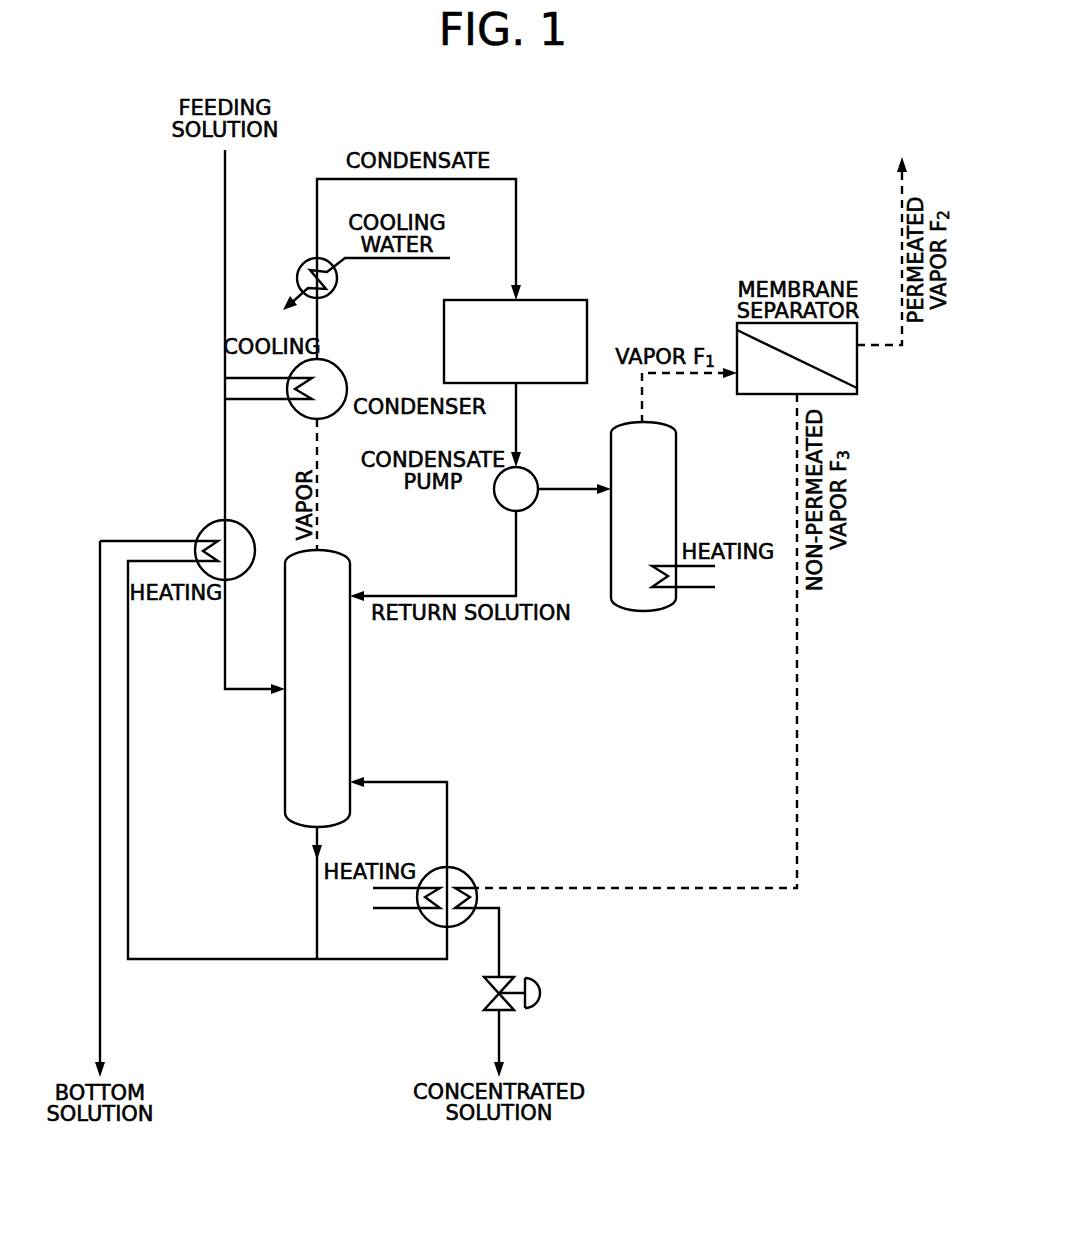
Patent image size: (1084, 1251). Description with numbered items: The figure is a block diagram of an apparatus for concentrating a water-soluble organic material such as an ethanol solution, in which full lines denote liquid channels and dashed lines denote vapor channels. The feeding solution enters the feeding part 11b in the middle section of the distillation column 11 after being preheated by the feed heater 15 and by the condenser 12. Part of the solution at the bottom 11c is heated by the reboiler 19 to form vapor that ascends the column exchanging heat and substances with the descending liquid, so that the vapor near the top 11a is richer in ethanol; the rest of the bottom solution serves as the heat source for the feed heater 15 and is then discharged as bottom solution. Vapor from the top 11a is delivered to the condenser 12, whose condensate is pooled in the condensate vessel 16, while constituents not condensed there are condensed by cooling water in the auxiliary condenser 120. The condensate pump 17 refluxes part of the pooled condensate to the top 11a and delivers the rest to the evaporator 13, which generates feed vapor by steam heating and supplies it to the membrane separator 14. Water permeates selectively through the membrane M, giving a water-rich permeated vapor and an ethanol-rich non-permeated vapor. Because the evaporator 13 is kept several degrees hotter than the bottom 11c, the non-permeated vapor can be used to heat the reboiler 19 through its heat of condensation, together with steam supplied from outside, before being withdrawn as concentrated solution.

The distillation column 11 is at (293, 683).
The top of distillation column 11a is at (345, 553).
The feeding part 11b is at (282, 683).
The bottom of distillation column 11c is at (290, 820).
The condenser 12 is at (347, 389).
The evaporator 13 is at (676, 462).
The membrane separator 14 is at (787, 348).
The feed heater 15 is at (212, 526).
The condensate vessel 16 is at (545, 300).
The condensate pump 17 is at (530, 471).
The reboiler 19 is at (463, 871).
The auxiliary condenser 120 is at (337, 280).
The membrane M is at (832, 374).